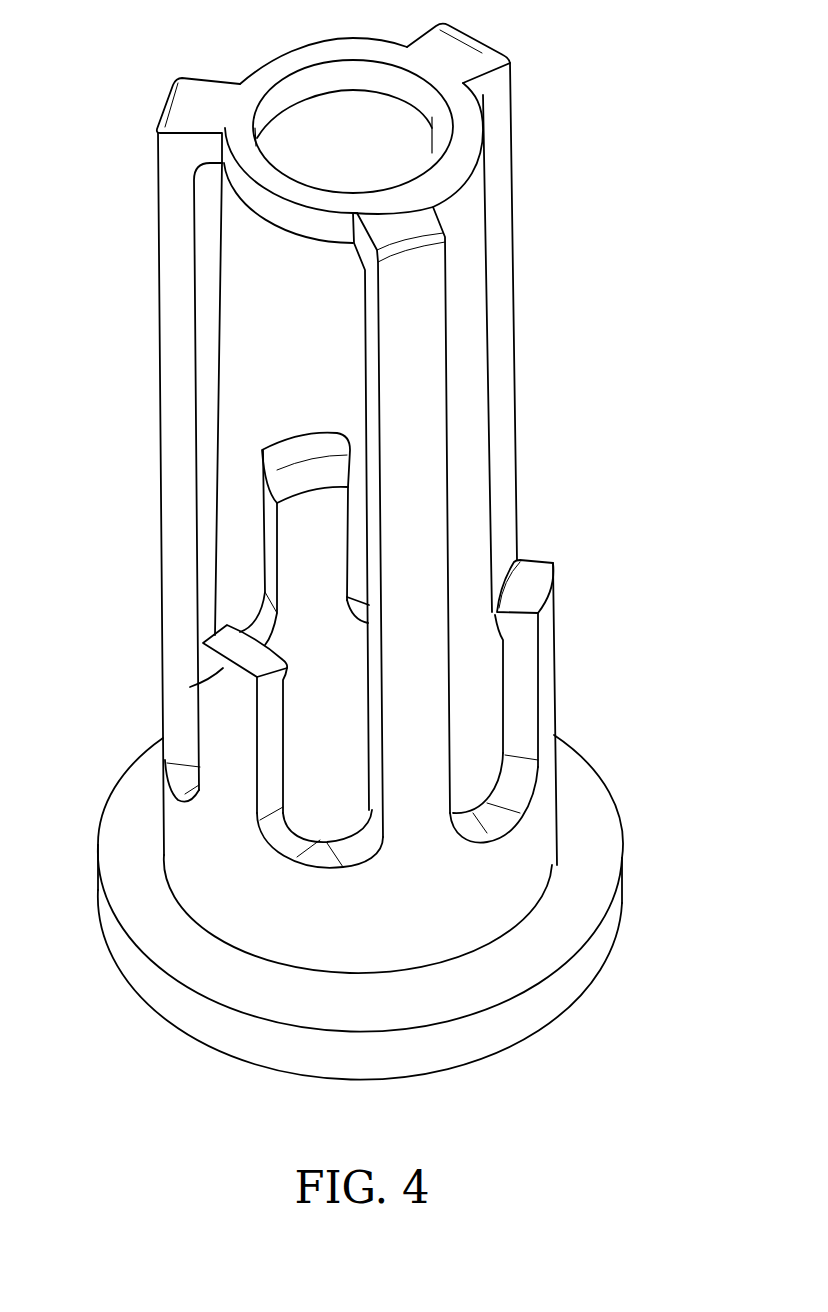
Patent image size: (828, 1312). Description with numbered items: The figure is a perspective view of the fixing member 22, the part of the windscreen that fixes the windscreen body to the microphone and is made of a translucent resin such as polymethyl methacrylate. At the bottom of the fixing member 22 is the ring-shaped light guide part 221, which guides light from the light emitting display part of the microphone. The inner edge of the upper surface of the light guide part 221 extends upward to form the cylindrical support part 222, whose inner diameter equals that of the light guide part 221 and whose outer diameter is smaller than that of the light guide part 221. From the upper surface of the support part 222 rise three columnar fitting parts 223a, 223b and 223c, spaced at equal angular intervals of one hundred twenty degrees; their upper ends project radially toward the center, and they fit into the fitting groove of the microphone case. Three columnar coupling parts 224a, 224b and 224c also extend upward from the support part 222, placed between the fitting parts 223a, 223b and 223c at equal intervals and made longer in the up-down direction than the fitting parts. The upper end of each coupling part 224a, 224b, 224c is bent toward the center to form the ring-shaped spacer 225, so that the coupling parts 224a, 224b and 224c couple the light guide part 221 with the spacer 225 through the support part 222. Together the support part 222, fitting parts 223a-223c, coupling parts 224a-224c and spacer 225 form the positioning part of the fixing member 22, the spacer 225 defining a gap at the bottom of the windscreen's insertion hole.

The fixing member 22 is at (372, 548).
The light guide part 221 is at (580, 971).
The support part 222 is at (501, 869).
The fitting part 223a is at (558, 612).
The fitting part 223b is at (203, 708).
The fitting part 223c is at (307, 433).
The coupling part 224a is at (367, 343).
The coupling part 224b is at (160, 315).
The coupling part 224c is at (512, 215).
The spacer 225 is at (287, 51).